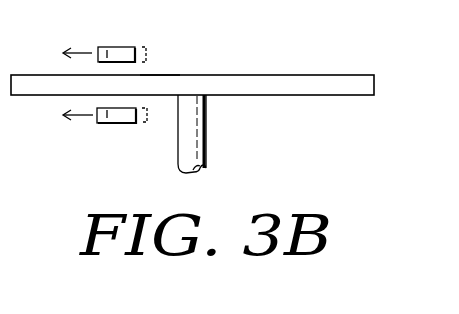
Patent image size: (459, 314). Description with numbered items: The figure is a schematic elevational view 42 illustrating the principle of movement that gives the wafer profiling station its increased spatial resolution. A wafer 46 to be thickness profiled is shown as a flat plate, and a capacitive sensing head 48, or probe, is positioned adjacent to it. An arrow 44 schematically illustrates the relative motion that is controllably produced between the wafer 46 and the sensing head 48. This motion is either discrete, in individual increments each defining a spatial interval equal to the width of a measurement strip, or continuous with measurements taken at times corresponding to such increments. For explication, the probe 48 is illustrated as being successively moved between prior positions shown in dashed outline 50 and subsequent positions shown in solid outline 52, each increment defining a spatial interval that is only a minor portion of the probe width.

The schematic elevational view 42 is at (108, 165).
The arrow 44 is at (82, 53).
The wafer 46 is at (263, 82).
The capacitive sensing head 48 is at (153, 70).
The dashed outline 50 is at (143, 47).
The solid outline 52 is at (98, 123).